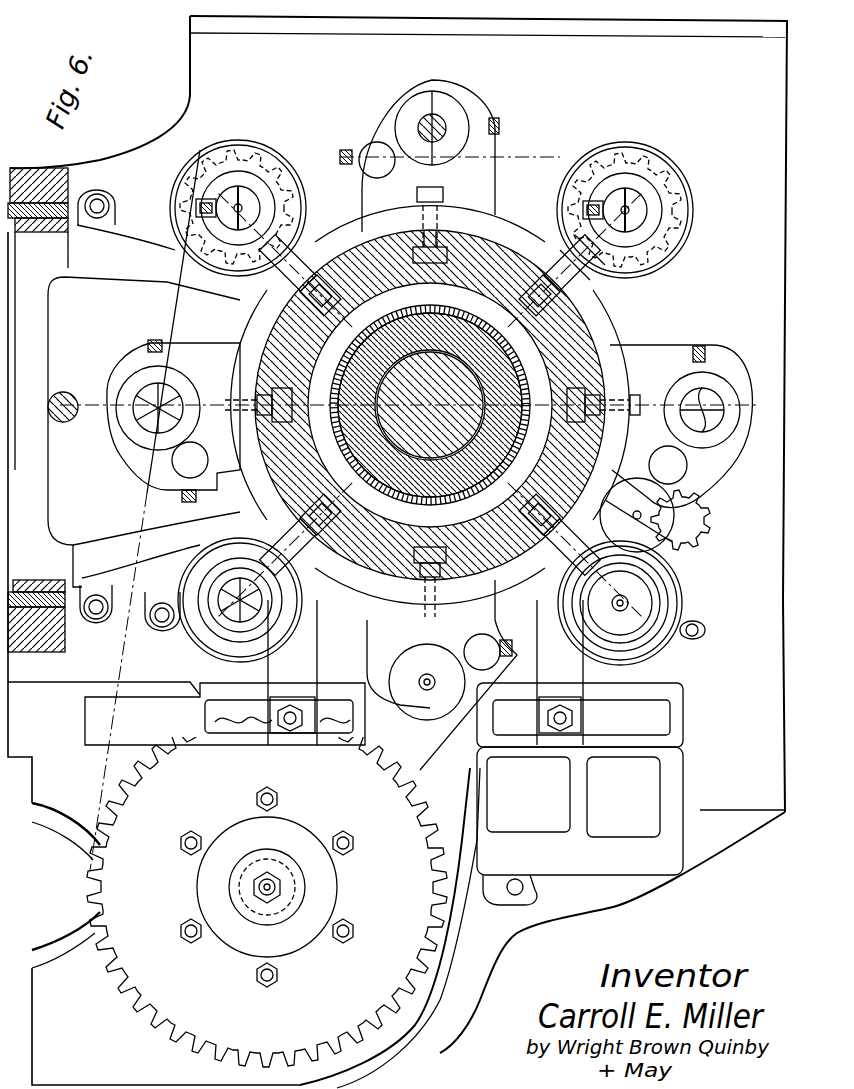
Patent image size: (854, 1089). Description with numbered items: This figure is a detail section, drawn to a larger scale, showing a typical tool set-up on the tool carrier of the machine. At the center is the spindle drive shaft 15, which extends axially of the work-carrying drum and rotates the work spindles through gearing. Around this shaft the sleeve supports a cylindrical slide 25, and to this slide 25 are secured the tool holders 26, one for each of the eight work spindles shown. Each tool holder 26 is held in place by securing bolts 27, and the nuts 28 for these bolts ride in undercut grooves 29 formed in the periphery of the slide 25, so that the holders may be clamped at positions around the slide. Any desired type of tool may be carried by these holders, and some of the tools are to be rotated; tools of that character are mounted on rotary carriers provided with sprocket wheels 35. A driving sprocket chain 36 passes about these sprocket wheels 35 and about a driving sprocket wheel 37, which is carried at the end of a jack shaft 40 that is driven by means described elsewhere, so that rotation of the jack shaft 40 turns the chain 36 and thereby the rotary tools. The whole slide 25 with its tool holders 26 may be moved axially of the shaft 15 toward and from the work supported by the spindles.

The spindle drive shaft 15 is at (462, 412).
The cylindrical slide 25 is at (570, 340).
The tool holder 26 is at (325, 205).
The securing bolt 27 is at (430, 196).
The nut 28 is at (280, 300).
The undercut groove 29 is at (372, 252).
The sprocket wheel 35 is at (200, 165).
The driving sprocket chain 36 is at (305, 155).
The driving sprocket wheel 37 is at (160, 996).
The jack shaft 40 is at (280, 912).